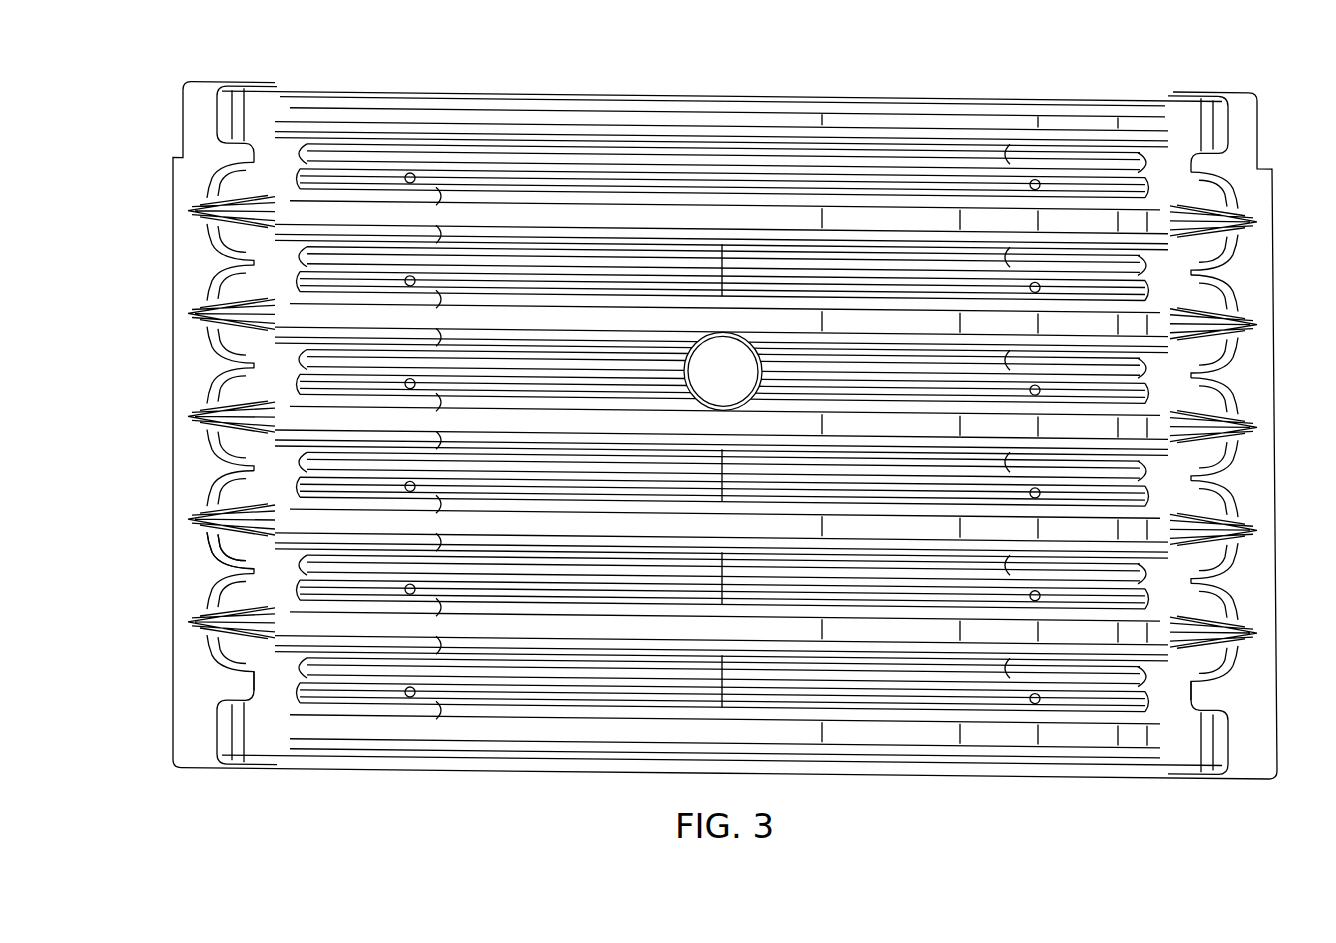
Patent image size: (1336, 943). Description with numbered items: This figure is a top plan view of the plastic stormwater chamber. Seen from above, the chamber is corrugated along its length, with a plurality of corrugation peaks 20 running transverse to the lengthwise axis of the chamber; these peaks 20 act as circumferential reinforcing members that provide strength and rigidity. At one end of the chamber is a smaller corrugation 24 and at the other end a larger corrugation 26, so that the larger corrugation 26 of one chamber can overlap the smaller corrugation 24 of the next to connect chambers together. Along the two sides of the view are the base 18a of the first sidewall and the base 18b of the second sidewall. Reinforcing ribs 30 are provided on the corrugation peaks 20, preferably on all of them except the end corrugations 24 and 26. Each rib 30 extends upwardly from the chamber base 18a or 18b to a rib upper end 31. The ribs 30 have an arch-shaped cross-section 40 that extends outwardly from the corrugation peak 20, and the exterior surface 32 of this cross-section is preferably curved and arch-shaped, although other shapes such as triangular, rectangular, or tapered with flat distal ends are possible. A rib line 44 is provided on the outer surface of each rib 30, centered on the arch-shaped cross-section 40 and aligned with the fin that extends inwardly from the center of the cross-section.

The base of first sidewall 18a is at (190, 107).
The base of second sidewall 18b is at (1258, 148).
The corrugation peaks 20 is at (782, 119).
The smaller corrugation 24 is at (546, 117).
The larger corrugation 26 is at (428, 733).
The reinforcing ribs 30 is at (212, 197).
The rib upper end 31 is at (273, 213).
The exterior surface of rib 32 is at (230, 430).
The arch-shaped cross-section 40 is at (210, 564).
The rib line 44 is at (215, 324).